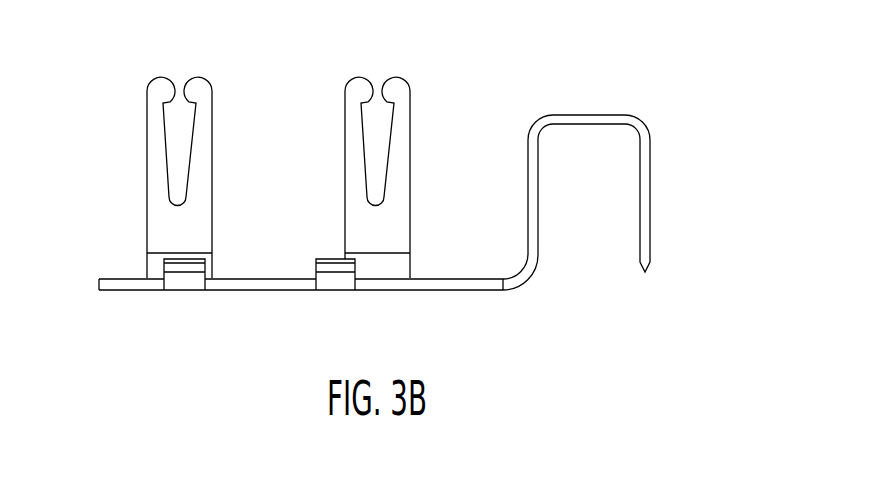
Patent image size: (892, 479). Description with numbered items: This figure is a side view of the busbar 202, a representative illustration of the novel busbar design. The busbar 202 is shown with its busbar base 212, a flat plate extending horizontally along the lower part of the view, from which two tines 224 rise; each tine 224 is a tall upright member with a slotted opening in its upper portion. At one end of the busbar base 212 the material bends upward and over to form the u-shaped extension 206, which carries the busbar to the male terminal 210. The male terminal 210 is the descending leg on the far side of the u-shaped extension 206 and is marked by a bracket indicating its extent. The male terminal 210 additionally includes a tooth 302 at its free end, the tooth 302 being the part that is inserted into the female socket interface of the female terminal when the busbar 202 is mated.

The busbar 202 is at (435, 188).
The u-shaped extension 206 is at (642, 164).
The male terminal 210 is at (642, 216).
The busbar base 212 is at (463, 285).
The tines 224 is at (157, 220).
The tooth 302 is at (646, 222).